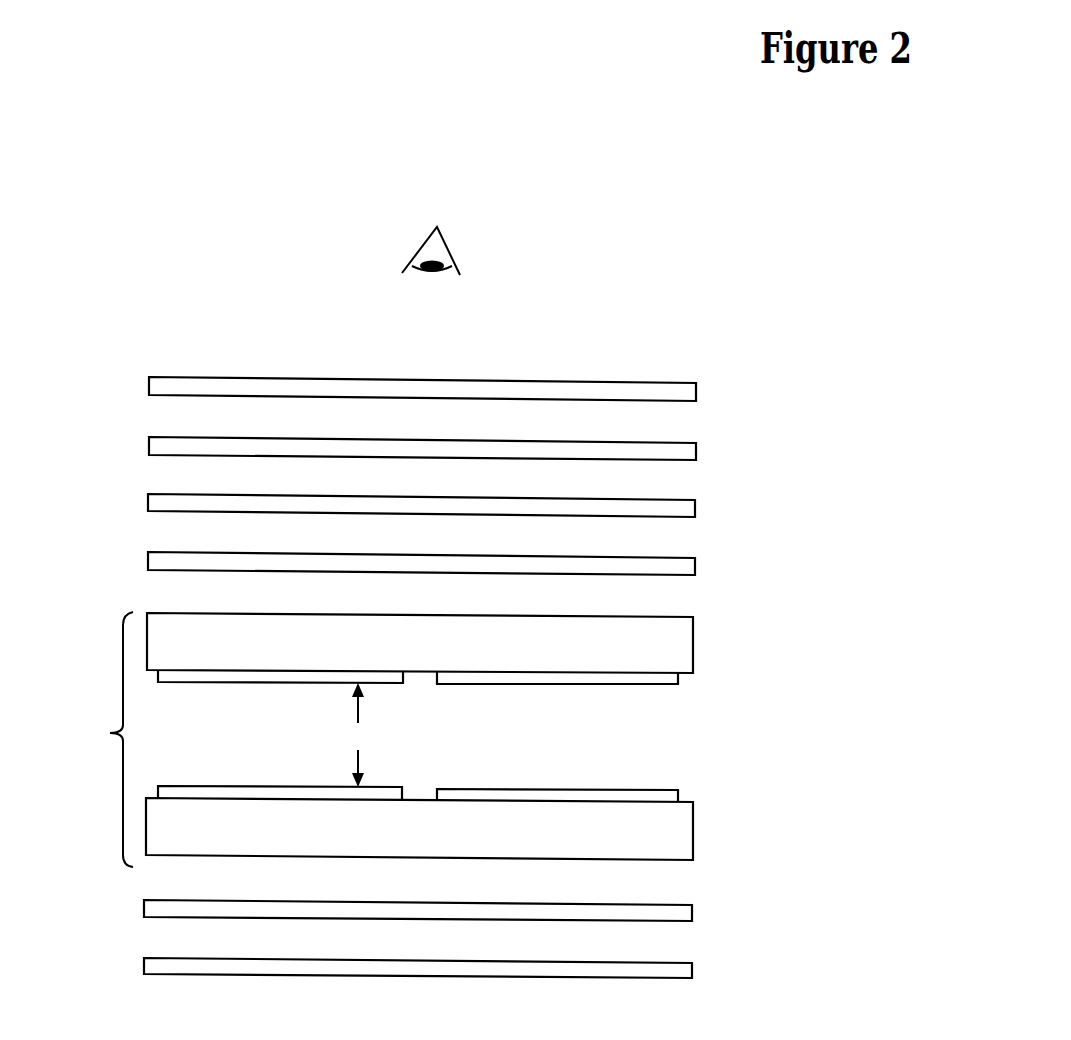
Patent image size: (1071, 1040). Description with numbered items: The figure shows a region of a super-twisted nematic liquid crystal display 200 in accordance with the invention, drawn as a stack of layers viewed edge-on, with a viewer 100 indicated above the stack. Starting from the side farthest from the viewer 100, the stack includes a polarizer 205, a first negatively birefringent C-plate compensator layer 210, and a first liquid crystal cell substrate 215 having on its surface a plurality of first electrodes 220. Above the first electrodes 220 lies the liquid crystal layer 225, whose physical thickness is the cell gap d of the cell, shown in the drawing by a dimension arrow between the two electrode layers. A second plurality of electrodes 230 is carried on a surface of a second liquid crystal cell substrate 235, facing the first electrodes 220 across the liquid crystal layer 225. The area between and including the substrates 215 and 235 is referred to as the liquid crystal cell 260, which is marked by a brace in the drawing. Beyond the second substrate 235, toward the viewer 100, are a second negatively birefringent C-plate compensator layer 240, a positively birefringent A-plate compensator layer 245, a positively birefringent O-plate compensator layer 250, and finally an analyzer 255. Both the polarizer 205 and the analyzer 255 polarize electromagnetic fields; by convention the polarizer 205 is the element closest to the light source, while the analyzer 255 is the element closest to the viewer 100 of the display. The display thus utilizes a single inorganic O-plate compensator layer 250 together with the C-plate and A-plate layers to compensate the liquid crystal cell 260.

The viewer 100 is at (431, 237).
The super-twisted nematic liquid crystal display 200 is at (658, 304).
The polarizer 205 is at (692, 970).
The first negatively birefringent C-plate compensator layer 210 is at (692, 913).
The first liquid crystal cell substrate 215 is at (693, 843).
The first electrodes 220 is at (678, 797).
The liquid crystal layer 225 is at (678, 737).
The second plurality of electrodes 230 is at (678, 680).
The second liquid crystal cell substrate 235 is at (693, 634).
The second negatively birefringent C-plate compensator layer 240 is at (695, 565).
The positively birefringent A-plate compensator layer 245 is at (695, 507).
The positively birefringent O-plate compensator layer 250 is at (696, 449).
The analyzer 255 is at (696, 388).
The liquid crystal cell 260 is at (110, 733).